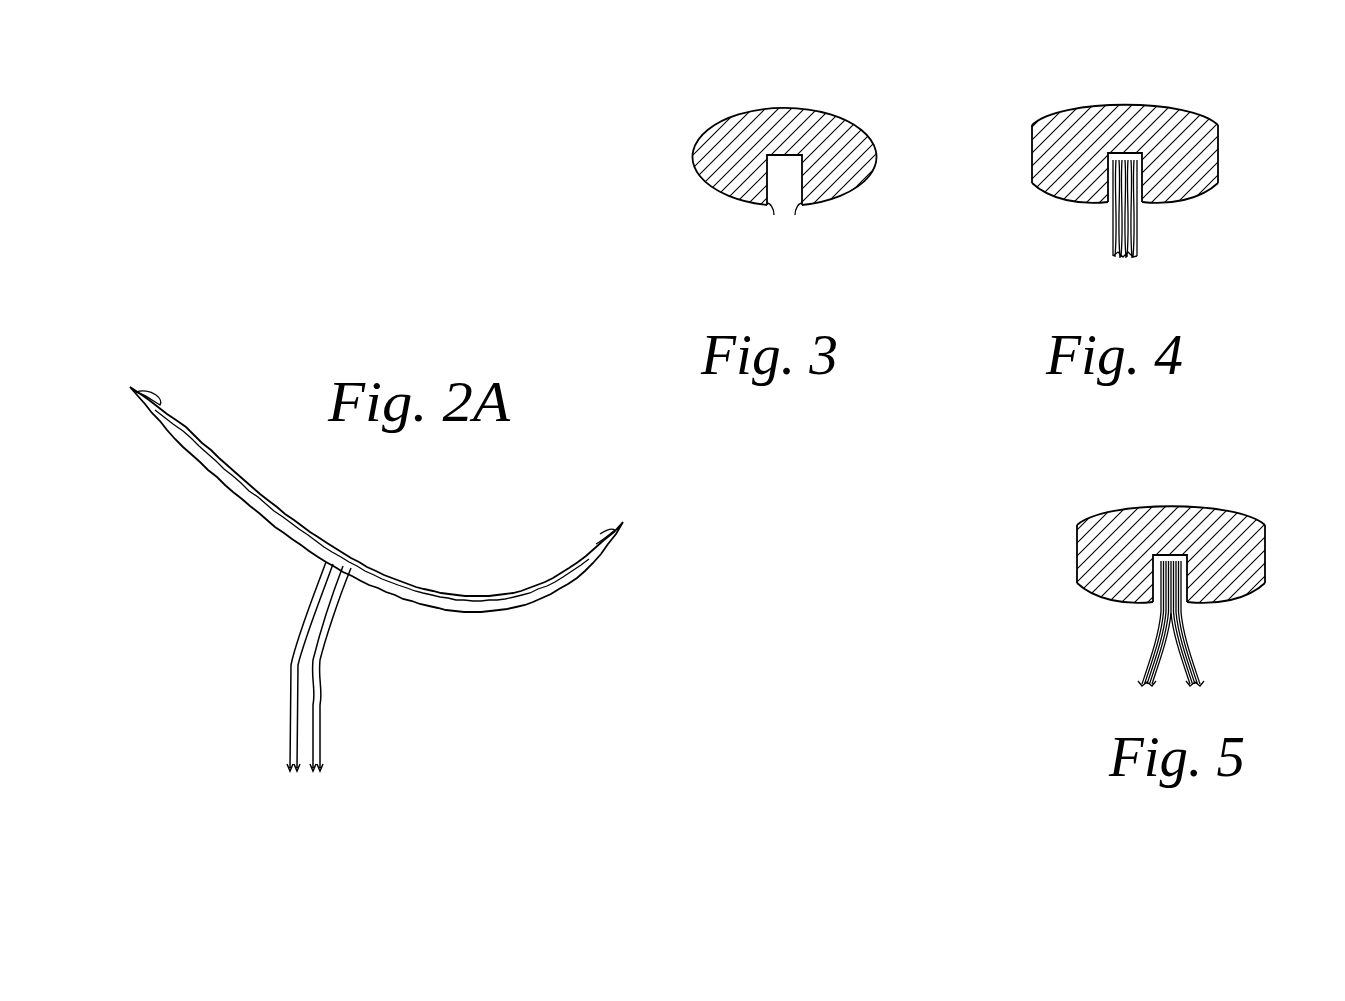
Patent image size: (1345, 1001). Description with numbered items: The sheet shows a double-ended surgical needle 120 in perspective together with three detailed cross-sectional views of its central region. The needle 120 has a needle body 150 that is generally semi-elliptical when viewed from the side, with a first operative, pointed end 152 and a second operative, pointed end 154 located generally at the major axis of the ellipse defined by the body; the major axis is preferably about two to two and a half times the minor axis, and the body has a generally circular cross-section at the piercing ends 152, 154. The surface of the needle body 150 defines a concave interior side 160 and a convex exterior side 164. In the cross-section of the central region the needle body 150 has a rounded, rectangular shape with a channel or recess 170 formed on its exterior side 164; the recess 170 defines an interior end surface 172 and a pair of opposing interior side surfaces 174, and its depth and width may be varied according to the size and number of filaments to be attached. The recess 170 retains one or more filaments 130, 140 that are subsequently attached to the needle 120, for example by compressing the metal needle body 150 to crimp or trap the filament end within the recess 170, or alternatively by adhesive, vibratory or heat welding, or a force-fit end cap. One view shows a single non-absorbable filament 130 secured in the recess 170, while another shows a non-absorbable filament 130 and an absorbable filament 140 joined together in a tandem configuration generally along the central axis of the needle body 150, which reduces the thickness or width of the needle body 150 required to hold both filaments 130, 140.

In FIG. 2A, the needle 120 is at (156, 354).
In FIG. 3, the needle 120 is at (676, 111).
In FIG. 4, the needle 120 is at (1026, 115).
In FIG. 5, the needle 120 is at (1068, 510).
In FIG. 2A, the filament 130 is at (324, 718).
In FIG. 4, the filament 130 is at (1113, 243).
In FIG. 5, the filament 130 is at (1155, 647).
In FIG. 2A, the filament 140 is at (286, 738).
In FIG. 5, the filament 140 is at (1190, 646).
In FIG. 2A, the needle body 150 is at (340, 568).
In FIG. 3, the needle body 150 is at (766, 107).
In FIG. 4, the needle body 150 is at (1105, 105).
In FIG. 5, the needle body 150 is at (1150, 508).
In FIG. 2A, the first operative, pointed end 152 is at (152, 394).
In FIG. 2A, the second operative, pointed end 154 is at (598, 537).
In FIG. 2A, the interior side 160 is at (428, 590).
In FIG. 3, the interior side 160 is at (822, 108).
In FIG. 4, the interior side 160 is at (1185, 106).
In FIG. 5, the interior side 160 is at (1222, 510).
In FIG. 2A, the exterior side 164 is at (448, 614).
In FIG. 3, the exterior side 164 is at (822, 206).
In FIG. 4, the exterior side 164 is at (1165, 205).
In FIG. 5, the exterior side 164 is at (1238, 603).
In FIG. 3, the channel or recess 170 is at (815, 255).
In FIG. 4, the channel or recess 170 is at (1088, 225).
In FIG. 5, the channel or recess 170 is at (1133, 624).
In FIG. 3, the interior end surface 172 is at (785, 160).
In FIG. 3, the interior side surfaces 174 is at (770, 206).